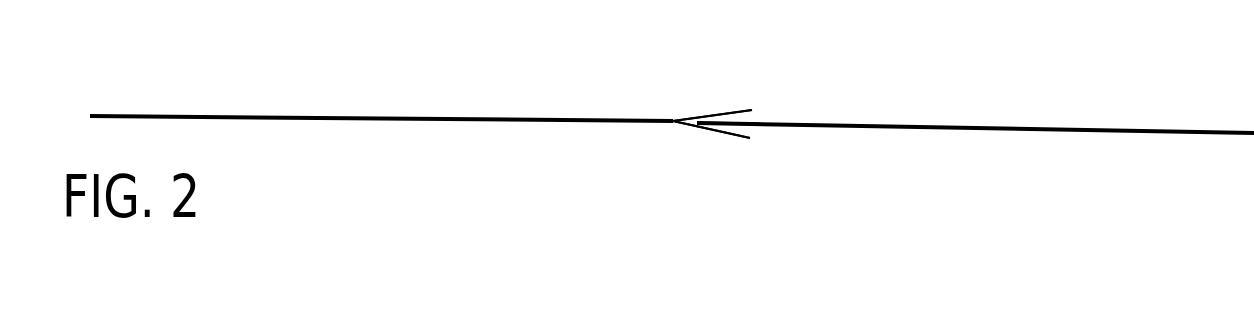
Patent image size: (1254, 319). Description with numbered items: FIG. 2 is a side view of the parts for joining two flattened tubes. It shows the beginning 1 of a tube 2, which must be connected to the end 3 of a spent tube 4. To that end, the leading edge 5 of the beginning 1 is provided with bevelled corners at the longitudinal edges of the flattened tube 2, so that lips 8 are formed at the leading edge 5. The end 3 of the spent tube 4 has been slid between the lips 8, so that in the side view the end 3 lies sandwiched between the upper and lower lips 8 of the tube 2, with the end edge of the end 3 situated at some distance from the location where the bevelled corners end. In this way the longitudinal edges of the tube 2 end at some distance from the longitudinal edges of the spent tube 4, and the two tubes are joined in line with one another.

The beginning 1 is at (660, 119).
The tube 2 is at (372, 123).
The end 3 is at (737, 128).
The spent tube 4 is at (997, 130).
The leading edge 5 is at (752, 110).
The lips 8 is at (722, 112).